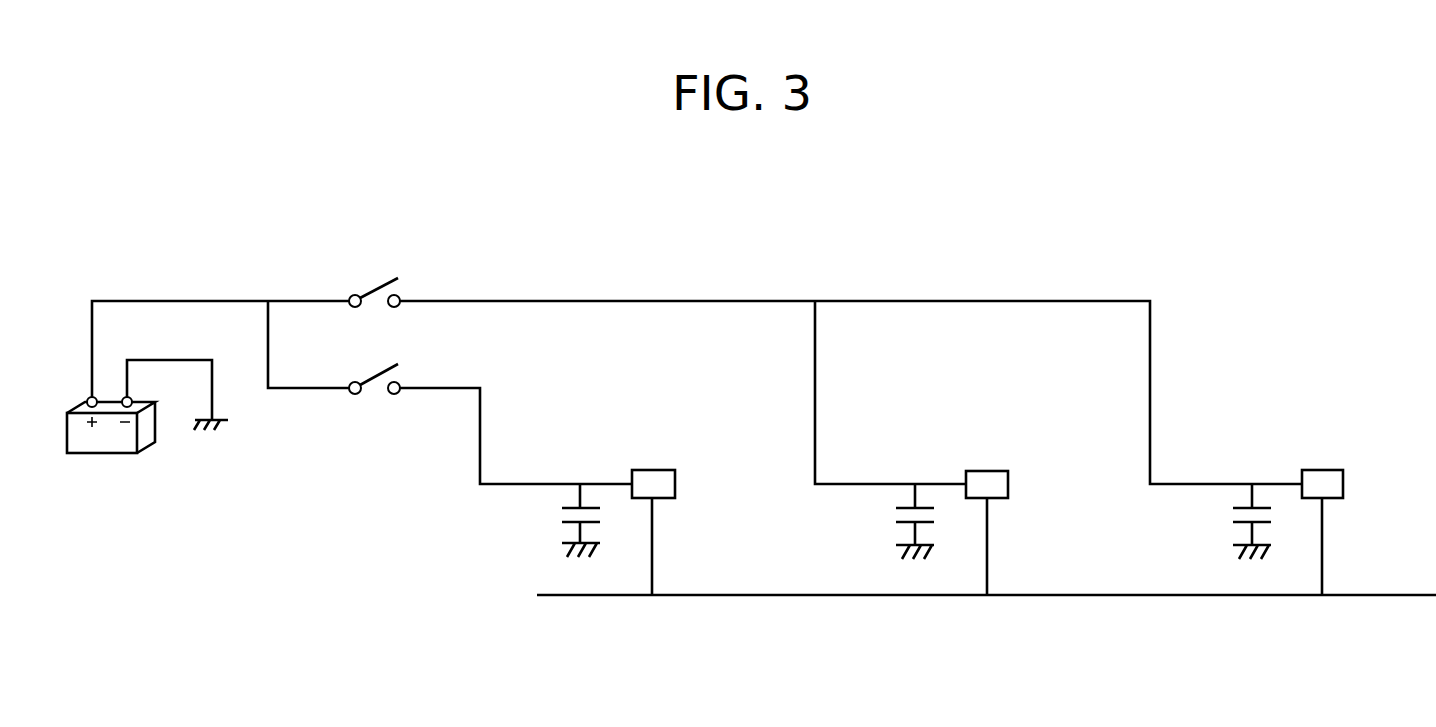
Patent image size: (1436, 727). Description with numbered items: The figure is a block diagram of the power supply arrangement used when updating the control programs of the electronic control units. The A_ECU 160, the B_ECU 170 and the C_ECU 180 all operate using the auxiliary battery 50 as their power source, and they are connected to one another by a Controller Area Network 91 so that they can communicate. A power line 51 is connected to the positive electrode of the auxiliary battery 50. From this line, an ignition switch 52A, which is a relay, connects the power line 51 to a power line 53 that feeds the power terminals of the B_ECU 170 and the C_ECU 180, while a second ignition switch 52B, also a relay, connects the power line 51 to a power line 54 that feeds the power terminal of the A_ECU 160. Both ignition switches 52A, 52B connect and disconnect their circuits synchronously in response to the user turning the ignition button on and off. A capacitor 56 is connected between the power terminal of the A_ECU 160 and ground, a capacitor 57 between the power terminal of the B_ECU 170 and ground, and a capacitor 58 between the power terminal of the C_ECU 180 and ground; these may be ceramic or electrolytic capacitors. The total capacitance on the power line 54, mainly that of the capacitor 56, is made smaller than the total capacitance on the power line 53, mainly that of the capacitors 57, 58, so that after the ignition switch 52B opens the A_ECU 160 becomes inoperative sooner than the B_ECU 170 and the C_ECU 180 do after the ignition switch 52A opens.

The auxiliary battery 50 is at (100, 455).
The power line 51 is at (183, 299).
The ignition switch 52A is at (371, 278).
The ignition switch 52B is at (375, 394).
The power line 53 is at (651, 300).
The power line 54 is at (481, 435).
The capacitor 56 is at (560, 535).
The capacitor 57 is at (895, 537).
The capacitor 58 is at (1230, 537).
The A_ECU 160 is at (677, 484).
The B_ECU 170 is at (1010, 484).
The C_ECU 180 is at (1345, 484).
The Controller Area Network (CAN) 91 is at (1380, 593).